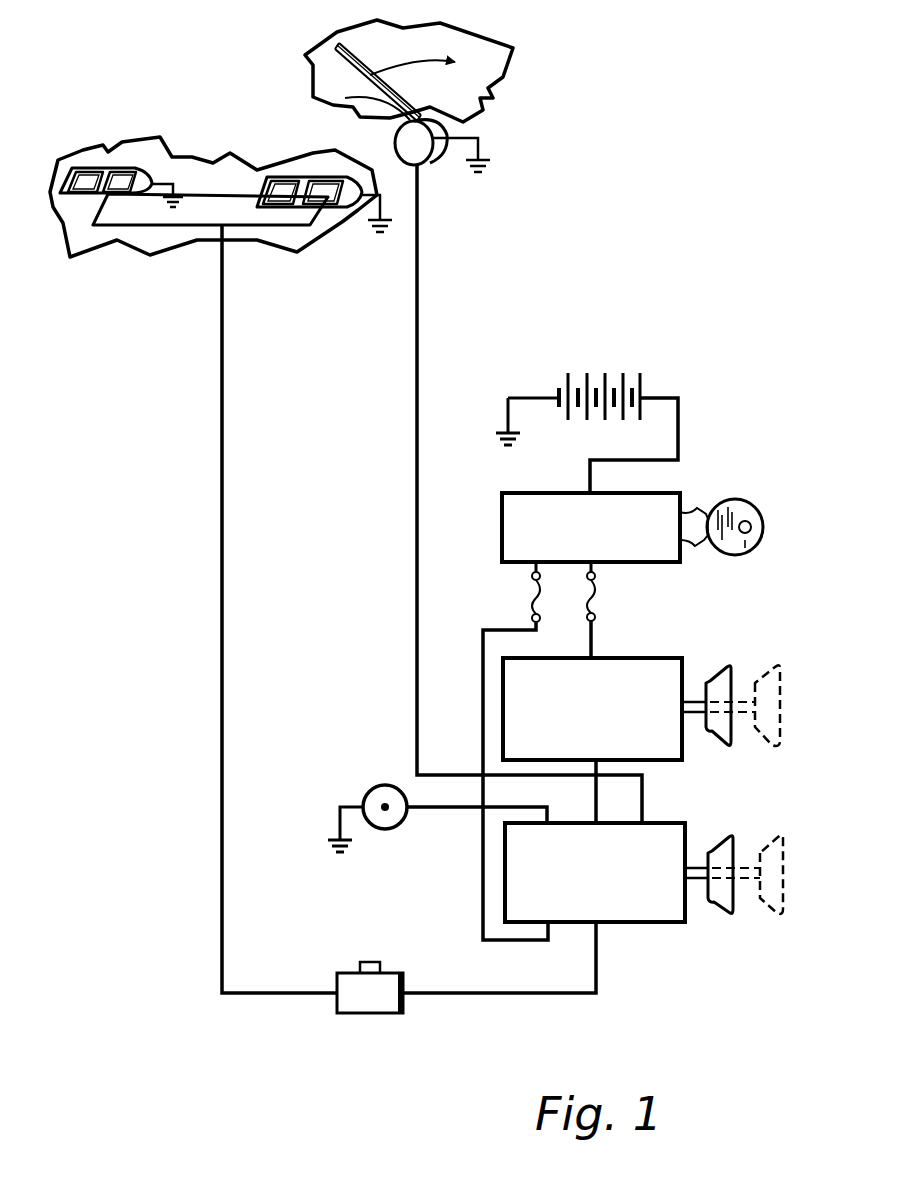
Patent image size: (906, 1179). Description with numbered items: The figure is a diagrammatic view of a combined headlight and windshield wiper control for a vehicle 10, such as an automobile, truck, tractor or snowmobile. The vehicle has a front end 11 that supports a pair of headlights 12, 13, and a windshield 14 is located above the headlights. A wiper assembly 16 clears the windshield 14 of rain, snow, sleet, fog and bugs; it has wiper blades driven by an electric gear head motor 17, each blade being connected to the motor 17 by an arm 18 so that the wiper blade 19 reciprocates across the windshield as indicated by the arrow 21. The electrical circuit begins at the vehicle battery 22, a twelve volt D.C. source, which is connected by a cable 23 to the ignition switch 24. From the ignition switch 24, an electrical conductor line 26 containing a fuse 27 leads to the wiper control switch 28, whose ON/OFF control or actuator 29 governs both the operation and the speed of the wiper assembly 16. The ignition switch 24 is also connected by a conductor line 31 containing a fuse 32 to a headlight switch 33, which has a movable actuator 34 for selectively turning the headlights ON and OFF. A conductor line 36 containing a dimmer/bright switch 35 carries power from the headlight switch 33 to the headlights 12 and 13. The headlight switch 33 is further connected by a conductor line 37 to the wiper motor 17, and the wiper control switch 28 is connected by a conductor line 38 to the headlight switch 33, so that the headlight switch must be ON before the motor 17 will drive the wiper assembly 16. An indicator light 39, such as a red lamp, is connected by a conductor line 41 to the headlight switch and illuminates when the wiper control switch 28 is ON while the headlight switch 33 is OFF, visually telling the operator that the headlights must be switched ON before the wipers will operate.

The vehicle 10 is at (562, 191).
The front end 11 is at (190, 157).
The headlight 12 is at (83, 177).
The headlight 13 is at (285, 178).
The windshield 14 is at (378, 103).
The wiper assembly 16 is at (465, 111).
The electric gear head motor 17 is at (423, 150).
The arm 18 is at (373, 95).
The wiper blade 19 is at (360, 62).
The arrow 21 is at (337, 99).
The vehicle battery 22 is at (605, 373).
The cable 23 is at (680, 423).
The ignition switch 24 is at (502, 499).
The electrical conductor line 26 is at (595, 638).
The fuse 27 is at (594, 598).
The wiper control switch 28 is at (668, 743).
The ON/OFF control or actuator 29 is at (720, 683).
The conductor line 31 is at (482, 705).
The fuse 32 is at (530, 593).
The headlight switch 33 is at (627, 905).
The movable actuator 34 is at (720, 900).
The dimmer/bright switch 35 is at (365, 1002).
The conductor line 36 is at (252, 995).
The conductor line 37 is at (420, 283).
The conductor line 38 is at (593, 800).
The indicator light 39 is at (372, 783).
The conductor line 41 is at (427, 810).